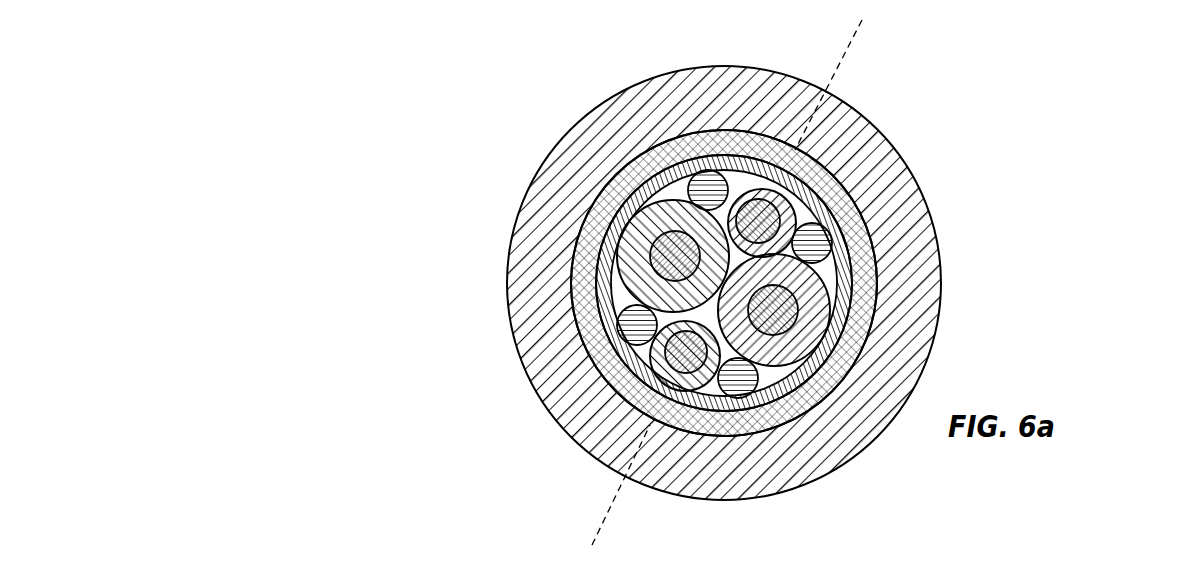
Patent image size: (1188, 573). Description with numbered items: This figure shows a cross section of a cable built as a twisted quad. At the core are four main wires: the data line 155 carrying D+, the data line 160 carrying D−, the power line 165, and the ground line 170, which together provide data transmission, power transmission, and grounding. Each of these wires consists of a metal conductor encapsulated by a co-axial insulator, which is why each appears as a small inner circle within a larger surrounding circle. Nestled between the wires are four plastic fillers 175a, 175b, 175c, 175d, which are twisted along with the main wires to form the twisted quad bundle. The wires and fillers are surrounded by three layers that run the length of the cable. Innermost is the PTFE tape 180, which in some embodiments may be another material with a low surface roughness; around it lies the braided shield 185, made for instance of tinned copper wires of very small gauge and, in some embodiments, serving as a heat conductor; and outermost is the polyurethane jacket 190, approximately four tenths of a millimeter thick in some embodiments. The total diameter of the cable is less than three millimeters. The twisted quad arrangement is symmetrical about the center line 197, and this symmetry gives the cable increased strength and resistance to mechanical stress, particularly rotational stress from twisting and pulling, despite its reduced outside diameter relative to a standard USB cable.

The data line (D+) 155 is at (700, 283).
The data line (D−) 160 is at (884, 310).
The power line 165 is at (715, 395).
The ground line 170 is at (845, 150).
The filler 175a is at (788, 400).
The filler 175b is at (622, 387).
The filler 175c is at (746, 165).
The filler 175d is at (860, 186).
The PTFE tape 180 is at (682, 135).
The braided shield 185 is at (618, 163).
The polyurethane jacket 190 is at (543, 207).
The center line 197 is at (858, 52).